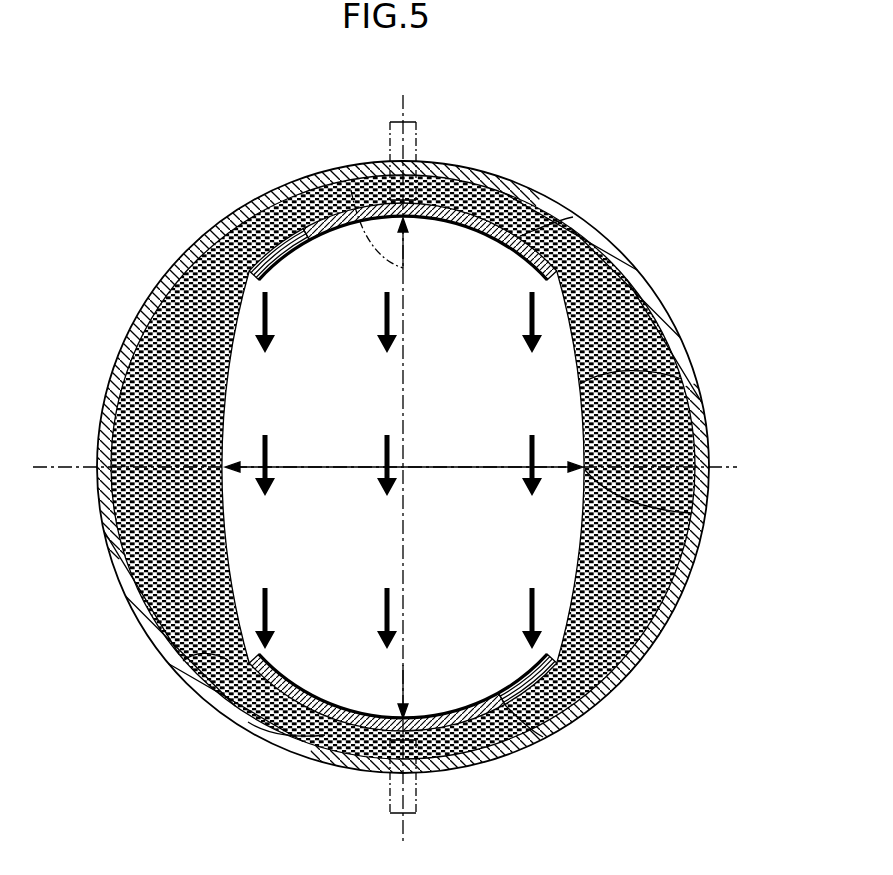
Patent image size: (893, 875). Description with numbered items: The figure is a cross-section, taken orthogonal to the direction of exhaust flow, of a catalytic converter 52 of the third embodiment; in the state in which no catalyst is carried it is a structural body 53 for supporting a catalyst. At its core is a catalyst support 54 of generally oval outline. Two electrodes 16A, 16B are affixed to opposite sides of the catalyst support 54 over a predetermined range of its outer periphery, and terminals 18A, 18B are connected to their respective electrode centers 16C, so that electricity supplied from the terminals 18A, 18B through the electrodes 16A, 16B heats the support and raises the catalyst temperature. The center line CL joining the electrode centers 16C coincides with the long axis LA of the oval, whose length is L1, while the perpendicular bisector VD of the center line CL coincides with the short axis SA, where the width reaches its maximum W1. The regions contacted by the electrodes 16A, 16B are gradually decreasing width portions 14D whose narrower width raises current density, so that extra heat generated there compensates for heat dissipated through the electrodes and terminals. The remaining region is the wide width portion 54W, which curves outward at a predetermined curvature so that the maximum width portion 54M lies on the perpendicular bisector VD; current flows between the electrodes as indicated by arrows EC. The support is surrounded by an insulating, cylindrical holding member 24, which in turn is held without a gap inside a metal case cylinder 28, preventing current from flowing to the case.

The catalytic converter 52 is at (563, 163).
The structural body for supporting a catalyst 53 is at (403, 451).
The holding member 24 is at (207, 302).
The case cylinder 28 is at (148, 637).
The catalyst support 54 is at (240, 637).
The wide width portion 54W is at (682, 379).
The maximum width portion 54M is at (690, 513).
The electrode 16A is at (588, 206).
The electrode 16B is at (543, 737).
The electrode center 16C is at (410, 207).
The gradually decreasing width portion 14D is at (307, 237).
The terminal 18A is at (390, 153).
The terminal 18B is at (390, 797).
The center line CL is at (400, 553).
The perpendicular bisector VD is at (68, 467).
The short axis SA is at (468, 470).
The maximum width W1 is at (404, 507).
The long axis LA is at (347, 177).
The length of the center line L1 is at (324, 203).
The current flow arrows EC is at (270, 322).